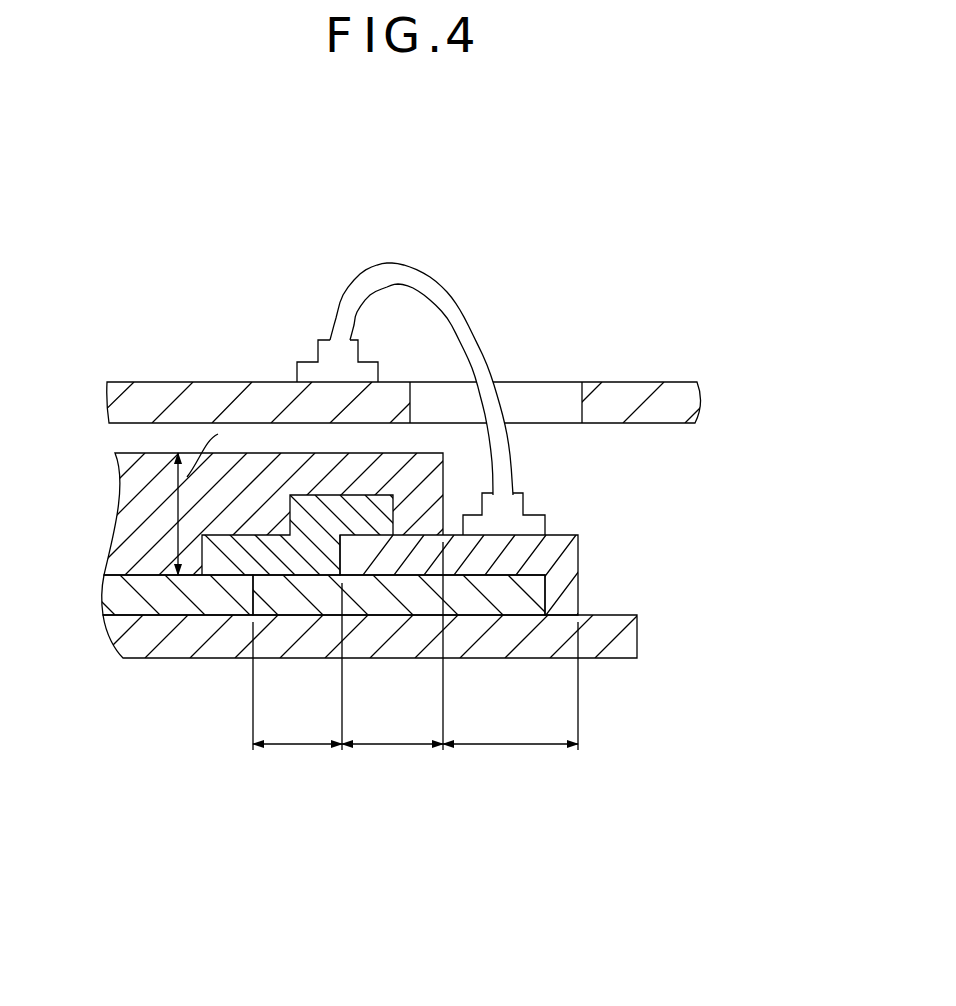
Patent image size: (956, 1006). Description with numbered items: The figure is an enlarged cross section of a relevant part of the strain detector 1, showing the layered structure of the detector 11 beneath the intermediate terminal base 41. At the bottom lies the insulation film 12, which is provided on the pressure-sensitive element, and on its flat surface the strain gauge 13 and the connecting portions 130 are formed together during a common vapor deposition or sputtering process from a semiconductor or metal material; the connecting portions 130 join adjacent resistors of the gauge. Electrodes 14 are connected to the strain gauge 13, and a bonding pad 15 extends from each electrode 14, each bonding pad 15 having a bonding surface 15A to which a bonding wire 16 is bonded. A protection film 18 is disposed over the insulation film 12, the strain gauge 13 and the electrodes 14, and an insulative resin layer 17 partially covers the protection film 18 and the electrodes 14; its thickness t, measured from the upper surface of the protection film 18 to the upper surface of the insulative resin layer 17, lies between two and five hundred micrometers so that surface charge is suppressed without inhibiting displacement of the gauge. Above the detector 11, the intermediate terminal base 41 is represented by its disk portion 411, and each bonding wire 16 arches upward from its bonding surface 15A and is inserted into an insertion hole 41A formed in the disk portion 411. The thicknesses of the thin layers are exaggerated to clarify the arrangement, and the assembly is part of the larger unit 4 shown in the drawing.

The strain detector 1 is at (110, 714).
The sensor unit 4 is at (549, 200).
The detector 11 is at (625, 692).
The insulation film 12 is at (226, 647).
The strain gauge 13 is at (297, 678).
The electrodes 14 is at (392, 657).
The bonding pads 15 is at (510, 697).
The bonding surface 15A is at (553, 532).
The bonding wires 16 is at (465, 310).
The insulative resin layer 17 is at (143, 478).
The protection film 18 is at (182, 603).
The connecting portions 130 is at (470, 600).
The intermediate terminal base 41 is at (131, 325).
The disk portion 411 is at (260, 398).
The insertion hole 41A is at (582, 395).